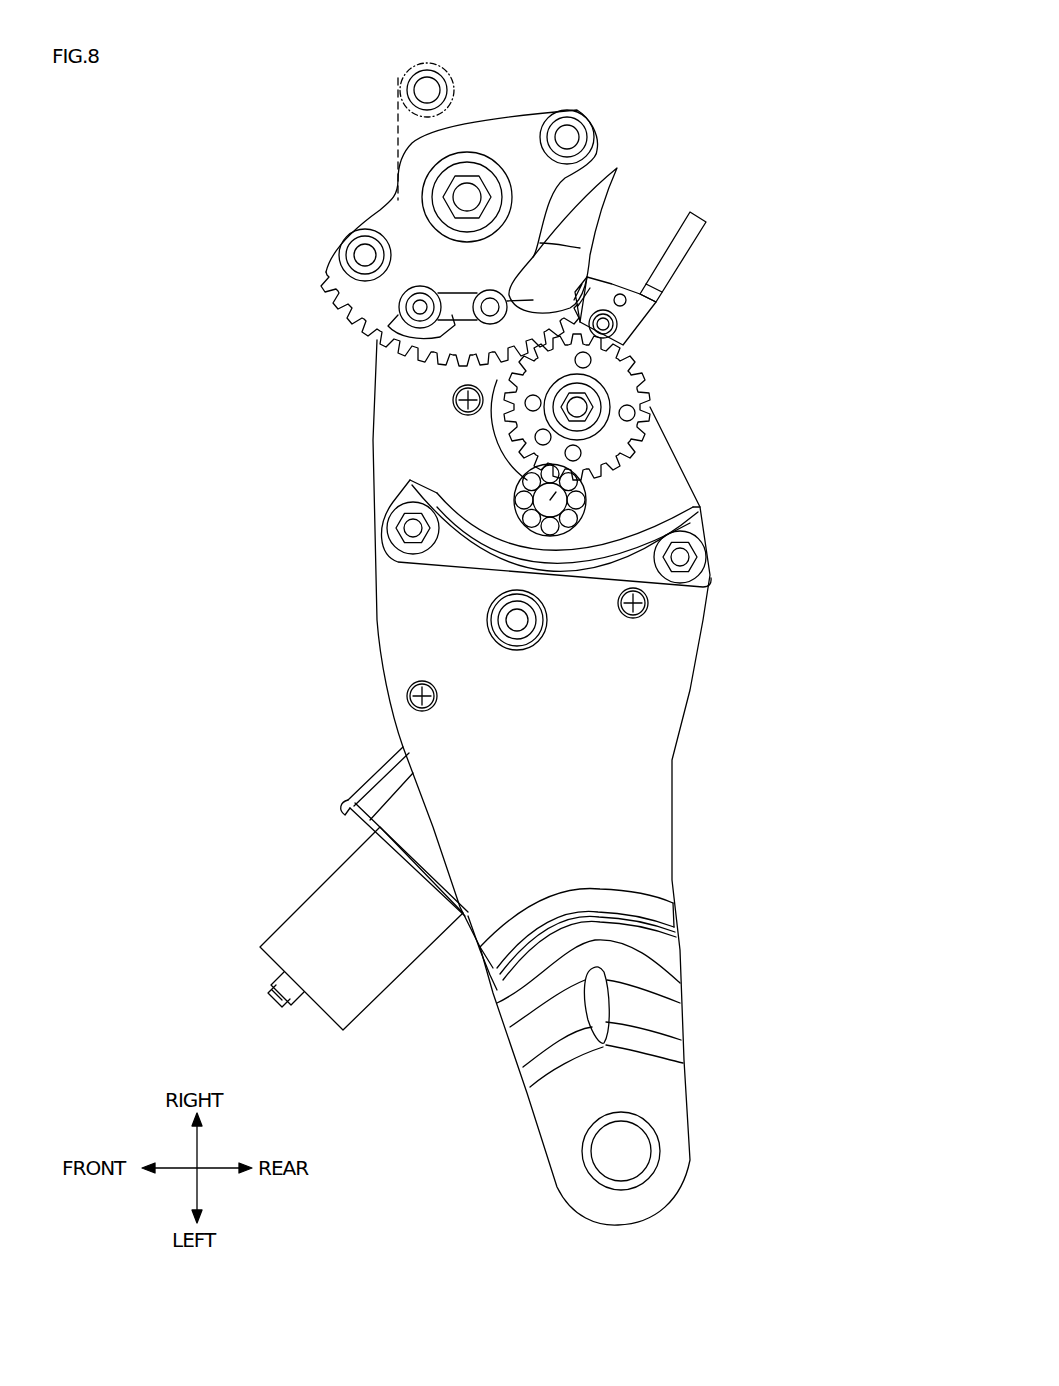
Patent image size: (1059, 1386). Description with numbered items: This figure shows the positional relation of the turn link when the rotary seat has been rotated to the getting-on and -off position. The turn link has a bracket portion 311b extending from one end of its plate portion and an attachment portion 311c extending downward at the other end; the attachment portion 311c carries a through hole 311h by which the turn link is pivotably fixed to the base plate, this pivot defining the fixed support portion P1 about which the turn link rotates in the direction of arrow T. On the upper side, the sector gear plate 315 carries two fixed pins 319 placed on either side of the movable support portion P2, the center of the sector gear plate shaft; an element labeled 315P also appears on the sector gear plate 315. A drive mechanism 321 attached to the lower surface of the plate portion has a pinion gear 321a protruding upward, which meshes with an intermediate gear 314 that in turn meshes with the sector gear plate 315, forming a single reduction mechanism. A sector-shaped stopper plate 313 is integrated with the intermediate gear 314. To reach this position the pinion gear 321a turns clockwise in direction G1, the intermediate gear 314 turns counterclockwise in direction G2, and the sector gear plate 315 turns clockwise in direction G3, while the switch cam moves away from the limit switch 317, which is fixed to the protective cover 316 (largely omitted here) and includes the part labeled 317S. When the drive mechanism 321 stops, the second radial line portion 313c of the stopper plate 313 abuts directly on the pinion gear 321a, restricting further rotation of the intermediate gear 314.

The sector gear plate 315 is at (535, 120).
The fixed pin 319 is at (570, 135).
The bracket portion 311b is at (617, 168).
The lever stopper 317S is at (580, 248).
The limit switch 317 is at (690, 258).
The sector gear pawl pin 315P is at (408, 328).
The intermediate gear 314 is at (650, 405).
The stopper plate 313 is at (493, 423).
The second radial line portion 313c is at (515, 491).
The pinion gear 321a is at (590, 513).
The protective cover 316 is at (693, 528).
The drive mechanism 321 is at (333, 900).
The attachment portion 311c is at (668, 1105).
The through hole 311h is at (661, 1157).
The fixed support portion P1 is at (622, 1150).
The movable support portion P2 is at (468, 192).
The rotation direction of pinion gear G1 is at (600, 502).
The rotation direction of intermediate gear G2 is at (650, 352).
The rotation direction of sector gear plate G3 is at (430, 388).
The rotation direction of turn link T is at (870, 877).